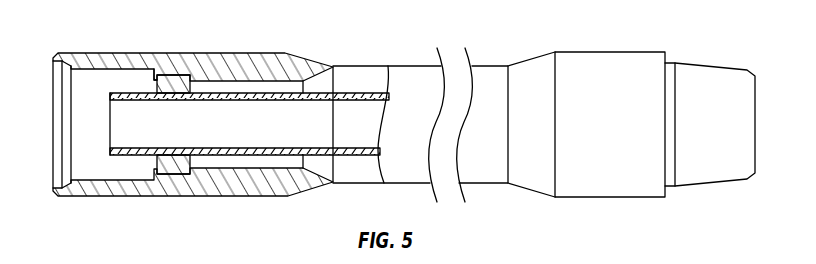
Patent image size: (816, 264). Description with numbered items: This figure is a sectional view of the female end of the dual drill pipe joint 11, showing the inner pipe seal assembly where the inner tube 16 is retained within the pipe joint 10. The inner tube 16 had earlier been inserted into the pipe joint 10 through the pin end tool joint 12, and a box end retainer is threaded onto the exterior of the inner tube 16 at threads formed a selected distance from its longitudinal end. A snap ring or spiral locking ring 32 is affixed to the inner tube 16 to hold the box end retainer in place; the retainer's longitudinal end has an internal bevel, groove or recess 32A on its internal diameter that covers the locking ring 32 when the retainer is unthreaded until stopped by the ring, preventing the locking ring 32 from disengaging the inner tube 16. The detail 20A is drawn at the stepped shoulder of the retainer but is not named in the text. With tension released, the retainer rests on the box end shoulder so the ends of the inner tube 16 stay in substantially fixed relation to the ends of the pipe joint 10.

The pipe joint 10 is at (491, 65).
The dual drill pipe joint 11 is at (710, 41).
The pin end tool joint 12 is at (192, 53).
The inner tube 16 is at (251, 80).
The shoulder 20A is at (153, 80).
The locking ring 32 is at (176, 163).
The internal bevel, groove or recess 32A is at (176, 83).